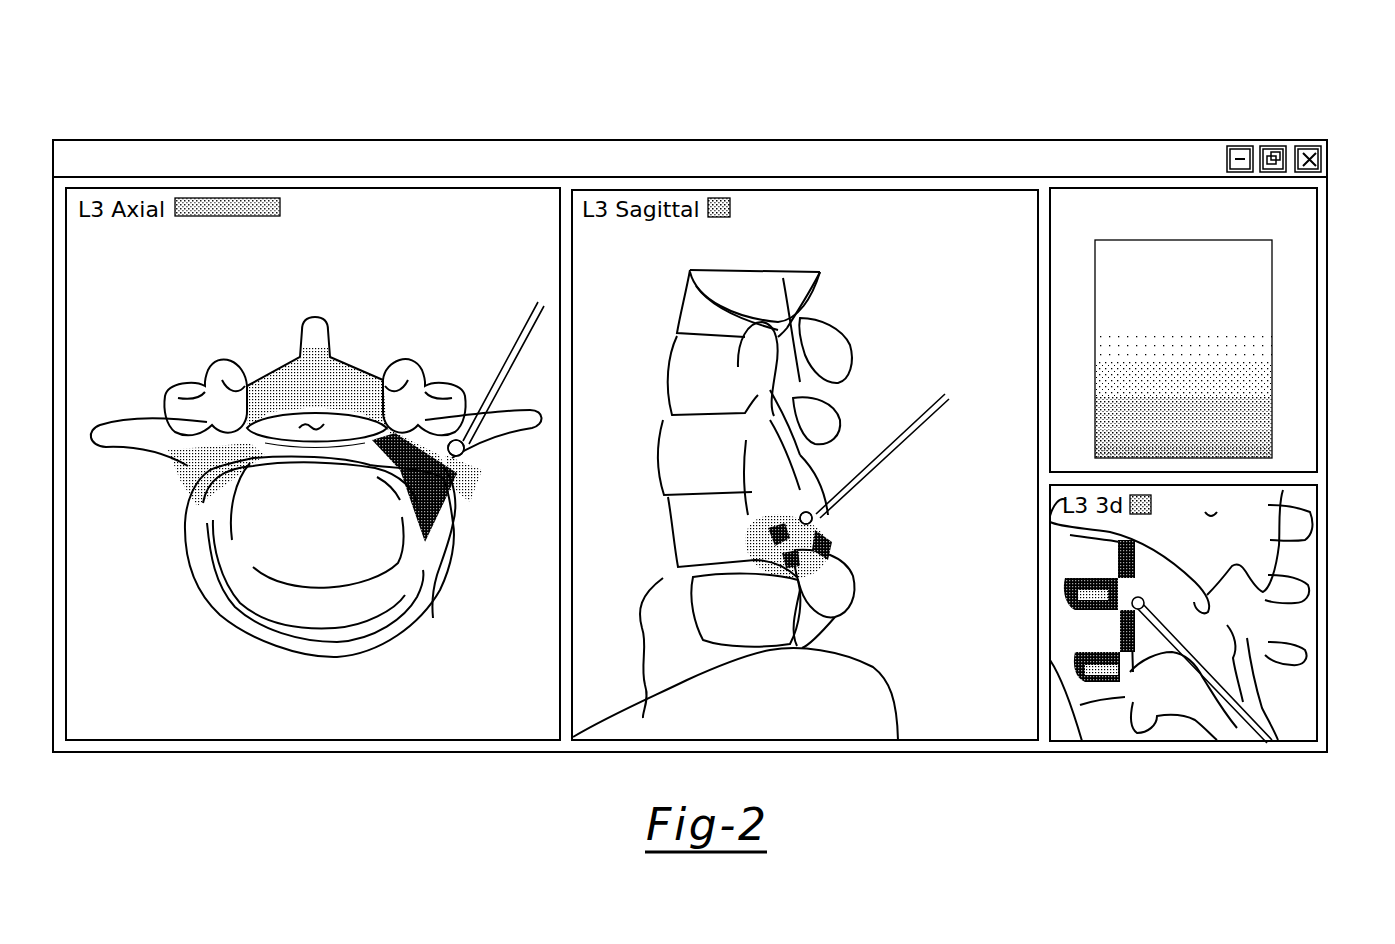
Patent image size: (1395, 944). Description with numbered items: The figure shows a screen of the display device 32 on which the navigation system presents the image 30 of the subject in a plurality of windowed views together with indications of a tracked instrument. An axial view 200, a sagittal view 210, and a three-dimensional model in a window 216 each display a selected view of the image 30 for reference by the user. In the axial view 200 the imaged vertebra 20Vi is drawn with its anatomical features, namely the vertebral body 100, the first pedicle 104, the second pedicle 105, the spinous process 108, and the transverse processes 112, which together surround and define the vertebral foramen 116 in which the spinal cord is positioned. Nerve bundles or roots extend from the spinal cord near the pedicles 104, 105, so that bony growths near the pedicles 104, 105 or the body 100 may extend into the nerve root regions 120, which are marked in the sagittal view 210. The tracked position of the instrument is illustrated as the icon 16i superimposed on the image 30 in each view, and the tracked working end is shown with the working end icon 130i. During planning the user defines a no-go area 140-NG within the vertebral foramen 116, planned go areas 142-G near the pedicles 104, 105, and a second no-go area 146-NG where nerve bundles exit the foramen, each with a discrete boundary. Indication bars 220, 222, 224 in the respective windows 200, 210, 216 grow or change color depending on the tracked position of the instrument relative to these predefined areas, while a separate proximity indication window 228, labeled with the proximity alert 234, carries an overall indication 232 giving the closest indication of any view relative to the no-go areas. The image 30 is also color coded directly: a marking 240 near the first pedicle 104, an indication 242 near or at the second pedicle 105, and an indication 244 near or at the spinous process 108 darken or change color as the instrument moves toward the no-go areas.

The axial view 200 is at (110, 713).
The display device 32 is at (555, 138).
The indication bar 220 is at (222, 198).
The indication bar 222 is at (718, 198).
The indication bar 224 is at (1152, 503).
The sagittal view 210 is at (926, 212).
The proximity indication 234 is at (1124, 203).
The proximity indication window 228 is at (1285, 216).
The overall indication 232 is at (1276, 343).
The 3D model window 216 is at (1290, 697).
The image 30 is at (974, 416).
The instrument icon 16i is at (510, 356).
The working end icon 130i is at (460, 458).
The spinous process 108 is at (313, 320).
The vertebral foramen 116 is at (312, 428).
The transverse processes 112 is at (104, 432).
The first pedicle 104 is at (186, 468).
The second pedicle 105 is at (446, 552).
The vertebral body 100 is at (268, 620).
The no-go area 140-NG is at (313, 406).
The indication near spinous process 244 is at (268, 405).
The indication near first pedicle 240 is at (165, 470).
The indication near second pedicle 242 is at (455, 490).
The imaged vertebra 20Vi is at (176, 540).
The planned go area 142-G is at (790, 535).
The second no-go area 146-NG is at (806, 592).
The nerve bundle or root regions 120 is at (830, 552).